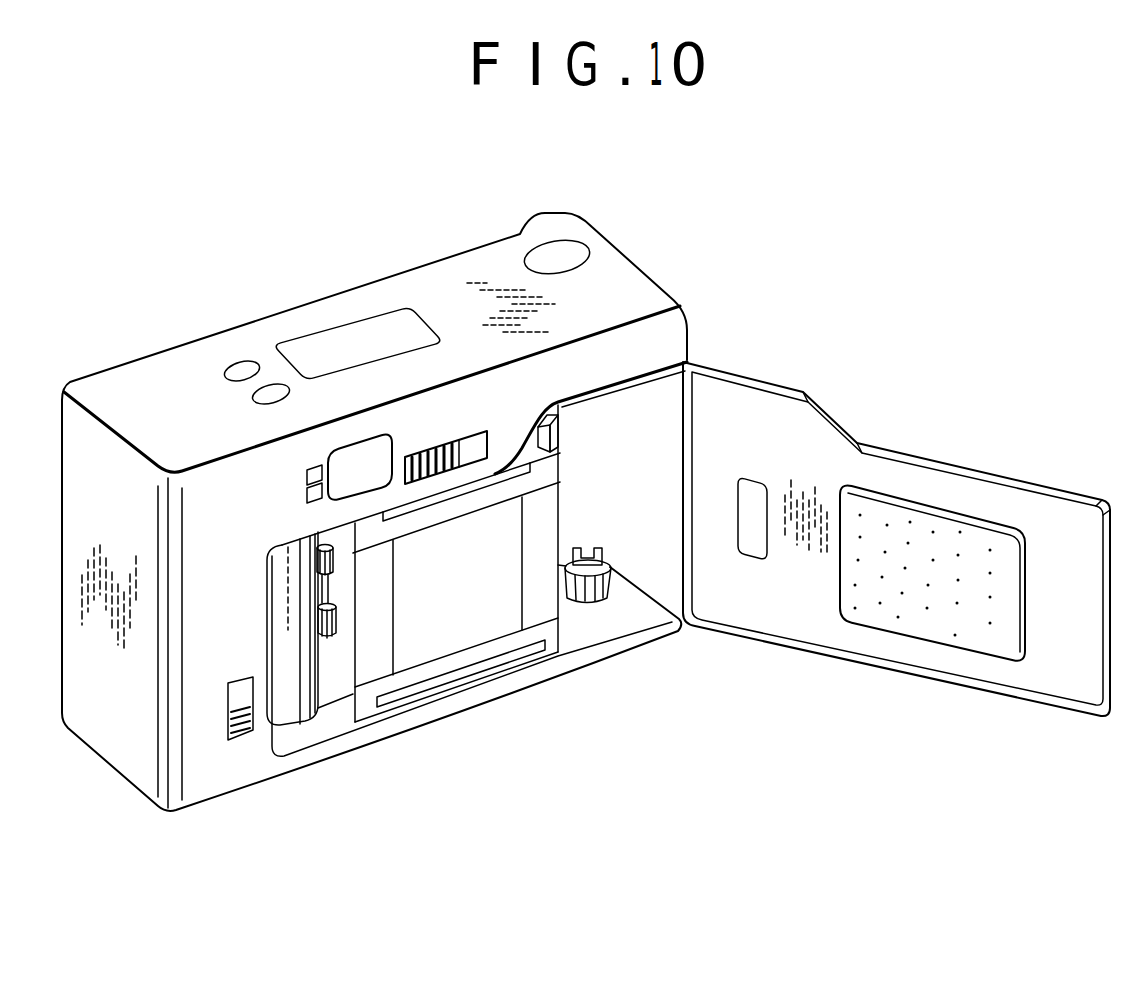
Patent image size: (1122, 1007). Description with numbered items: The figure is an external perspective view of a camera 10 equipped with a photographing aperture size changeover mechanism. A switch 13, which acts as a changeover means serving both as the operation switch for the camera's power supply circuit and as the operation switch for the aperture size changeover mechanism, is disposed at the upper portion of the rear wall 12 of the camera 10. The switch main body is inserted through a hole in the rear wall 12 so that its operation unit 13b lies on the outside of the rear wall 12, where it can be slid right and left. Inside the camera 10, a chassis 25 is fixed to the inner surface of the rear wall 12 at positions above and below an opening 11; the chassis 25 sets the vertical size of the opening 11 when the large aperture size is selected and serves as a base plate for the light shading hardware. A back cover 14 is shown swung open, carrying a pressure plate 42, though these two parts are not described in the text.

The camera 10 is at (631, 210).
The opening 11 is at (460, 621).
The rear wall 12 is at (242, 760).
The switch 13 is at (455, 416).
The operation unit 13b is at (427, 452).
The back cover 14 is at (835, 421).
The chassis 25 is at (483, 497).
The pressure plate 42 is at (943, 507).